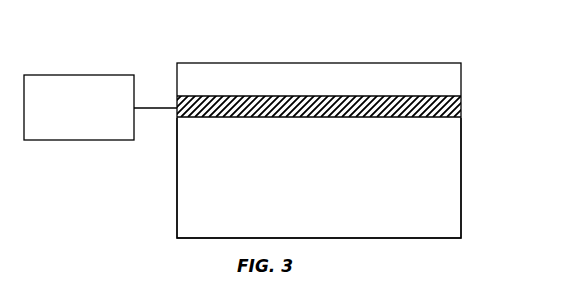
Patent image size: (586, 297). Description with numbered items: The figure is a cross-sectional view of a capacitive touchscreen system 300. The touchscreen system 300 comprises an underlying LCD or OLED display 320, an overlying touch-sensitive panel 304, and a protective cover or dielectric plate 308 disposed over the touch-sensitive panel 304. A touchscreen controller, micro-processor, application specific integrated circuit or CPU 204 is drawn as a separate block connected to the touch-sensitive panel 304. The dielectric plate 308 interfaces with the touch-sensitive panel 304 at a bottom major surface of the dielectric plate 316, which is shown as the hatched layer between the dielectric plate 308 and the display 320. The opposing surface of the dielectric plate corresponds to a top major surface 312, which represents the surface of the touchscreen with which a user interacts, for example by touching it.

The touchscreen controller 204 is at (79, 73).
The capacitive touchscreen system 300 is at (309, 128).
The touch-sensitive panel 304 is at (462, 110).
The dielectric plate 308 is at (462, 73).
The top major surface 312 is at (411, 63).
The bottom major surface of the dielectric plate 316 is at (462, 97).
The LCD or OLED display 320 is at (462, 172).